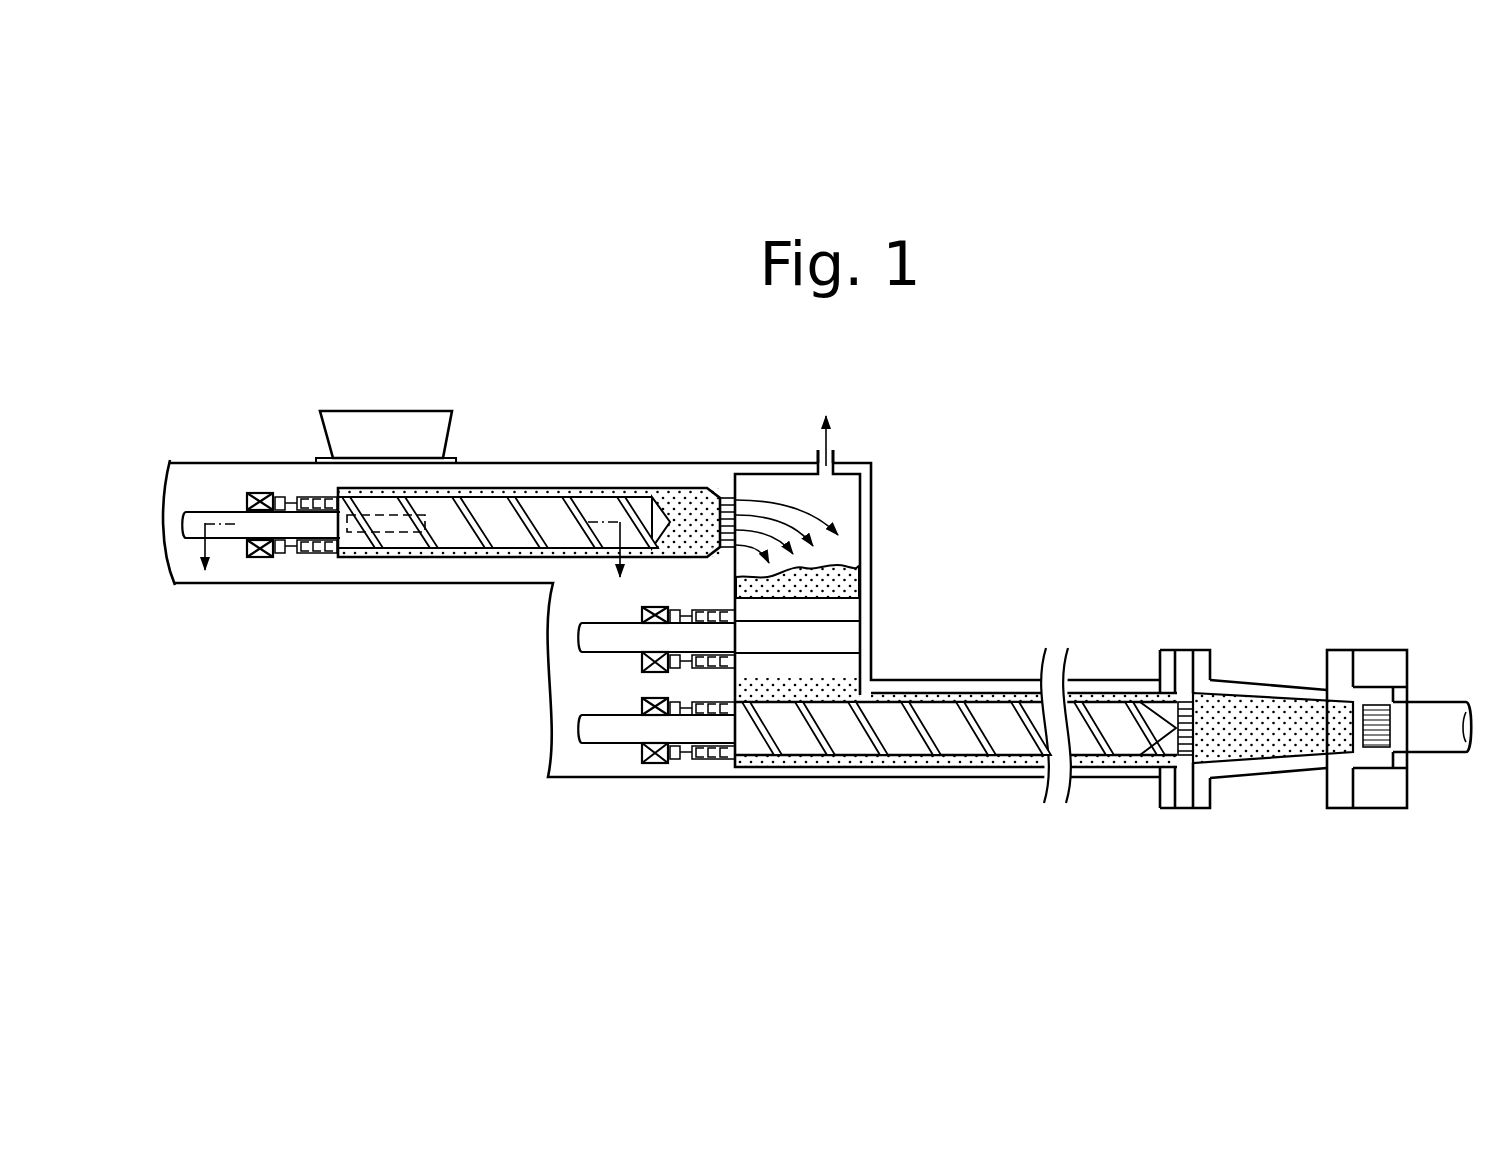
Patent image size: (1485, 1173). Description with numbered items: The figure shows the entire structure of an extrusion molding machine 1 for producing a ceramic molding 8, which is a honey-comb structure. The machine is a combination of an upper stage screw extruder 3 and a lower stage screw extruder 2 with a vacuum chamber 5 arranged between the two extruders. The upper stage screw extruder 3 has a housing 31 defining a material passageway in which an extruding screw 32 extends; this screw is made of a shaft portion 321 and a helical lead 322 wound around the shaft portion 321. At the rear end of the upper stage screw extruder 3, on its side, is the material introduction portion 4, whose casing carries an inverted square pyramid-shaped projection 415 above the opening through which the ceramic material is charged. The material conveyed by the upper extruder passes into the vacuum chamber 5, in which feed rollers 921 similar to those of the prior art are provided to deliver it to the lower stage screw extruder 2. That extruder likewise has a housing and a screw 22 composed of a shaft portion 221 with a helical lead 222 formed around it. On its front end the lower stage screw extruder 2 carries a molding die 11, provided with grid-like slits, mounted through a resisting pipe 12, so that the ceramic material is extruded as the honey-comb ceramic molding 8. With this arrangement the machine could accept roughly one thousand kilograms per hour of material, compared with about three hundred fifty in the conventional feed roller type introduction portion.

The extrusion molding machine 1 is at (1107, 452).
The lower stage screw extruder 2 is at (940, 693).
The upper stage screw extruder 3 is at (577, 475).
The material introduction portion 4 is at (372, 420).
The vacuum chamber 5 is at (838, 498).
The ceramic molding 8 is at (1442, 718).
The molding die 11 is at (1380, 792).
The resisting pipe 12 is at (1240, 770).
The screw 22 is at (849, 742).
The housing 31 is at (340, 570).
The extruding screw 32 is at (520, 558).
The shaft portion 221 is at (900, 742).
The helical lead 222 is at (975, 738).
The shaft portion 321 is at (495, 558).
The helical lead 322 is at (475, 558).
The inverted square pyramid-shaped projection 415 is at (423, 432).
The feed rollers 921 is at (840, 638).